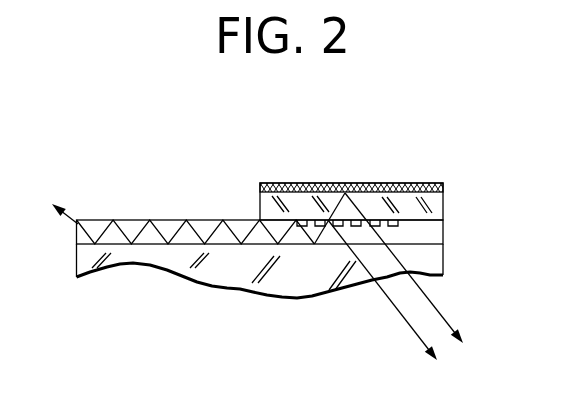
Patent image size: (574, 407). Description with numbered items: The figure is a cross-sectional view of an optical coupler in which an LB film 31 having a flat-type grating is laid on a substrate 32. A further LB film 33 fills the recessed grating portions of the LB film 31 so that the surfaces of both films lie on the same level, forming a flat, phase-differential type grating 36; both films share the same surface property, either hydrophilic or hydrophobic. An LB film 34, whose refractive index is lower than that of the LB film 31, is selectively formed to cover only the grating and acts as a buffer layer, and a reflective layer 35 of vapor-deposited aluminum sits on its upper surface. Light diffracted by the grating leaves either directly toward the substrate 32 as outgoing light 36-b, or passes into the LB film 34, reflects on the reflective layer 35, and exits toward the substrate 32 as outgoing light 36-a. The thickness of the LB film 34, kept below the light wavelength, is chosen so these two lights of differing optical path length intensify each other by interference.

The LB film 31 is at (177, 222).
The substrate 32 is at (125, 259).
The LB film 33 is at (400, 222).
The LB film 34 is at (433, 203).
The reflective layer 35 is at (331, 184).
The grating 36 is at (371, 204).
The outgoing light 36-a is at (423, 268).
The outgoing light 36-b is at (382, 299).